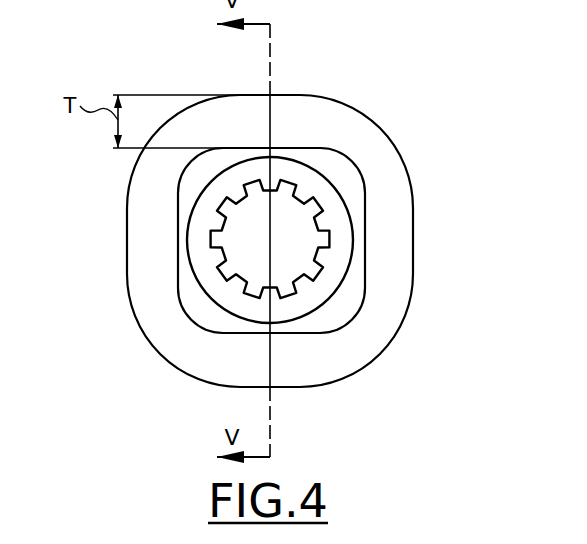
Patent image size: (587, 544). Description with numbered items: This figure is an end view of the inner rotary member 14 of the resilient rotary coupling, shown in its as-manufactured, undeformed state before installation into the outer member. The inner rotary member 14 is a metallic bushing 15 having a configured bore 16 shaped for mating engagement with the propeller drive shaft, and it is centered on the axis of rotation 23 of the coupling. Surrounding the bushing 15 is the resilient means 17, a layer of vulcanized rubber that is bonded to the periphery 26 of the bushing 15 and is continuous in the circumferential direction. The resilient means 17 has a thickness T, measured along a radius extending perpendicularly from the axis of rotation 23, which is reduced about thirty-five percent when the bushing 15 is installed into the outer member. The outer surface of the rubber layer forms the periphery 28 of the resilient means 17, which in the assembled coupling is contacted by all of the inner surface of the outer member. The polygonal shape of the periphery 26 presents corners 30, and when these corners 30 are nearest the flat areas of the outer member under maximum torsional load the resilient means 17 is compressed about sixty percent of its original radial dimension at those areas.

The inner rotary member 14 is at (308, 182).
The bushing 15 is at (278, 170).
The configured bore 16 is at (232, 224).
The resilient means 17 is at (326, 343).
The axis of rotation 23 is at (268, 242).
The periphery 26 is at (362, 258).
The periphery of the resilient means 28 is at (413, 212).
The corners 30 is at (180, 168).